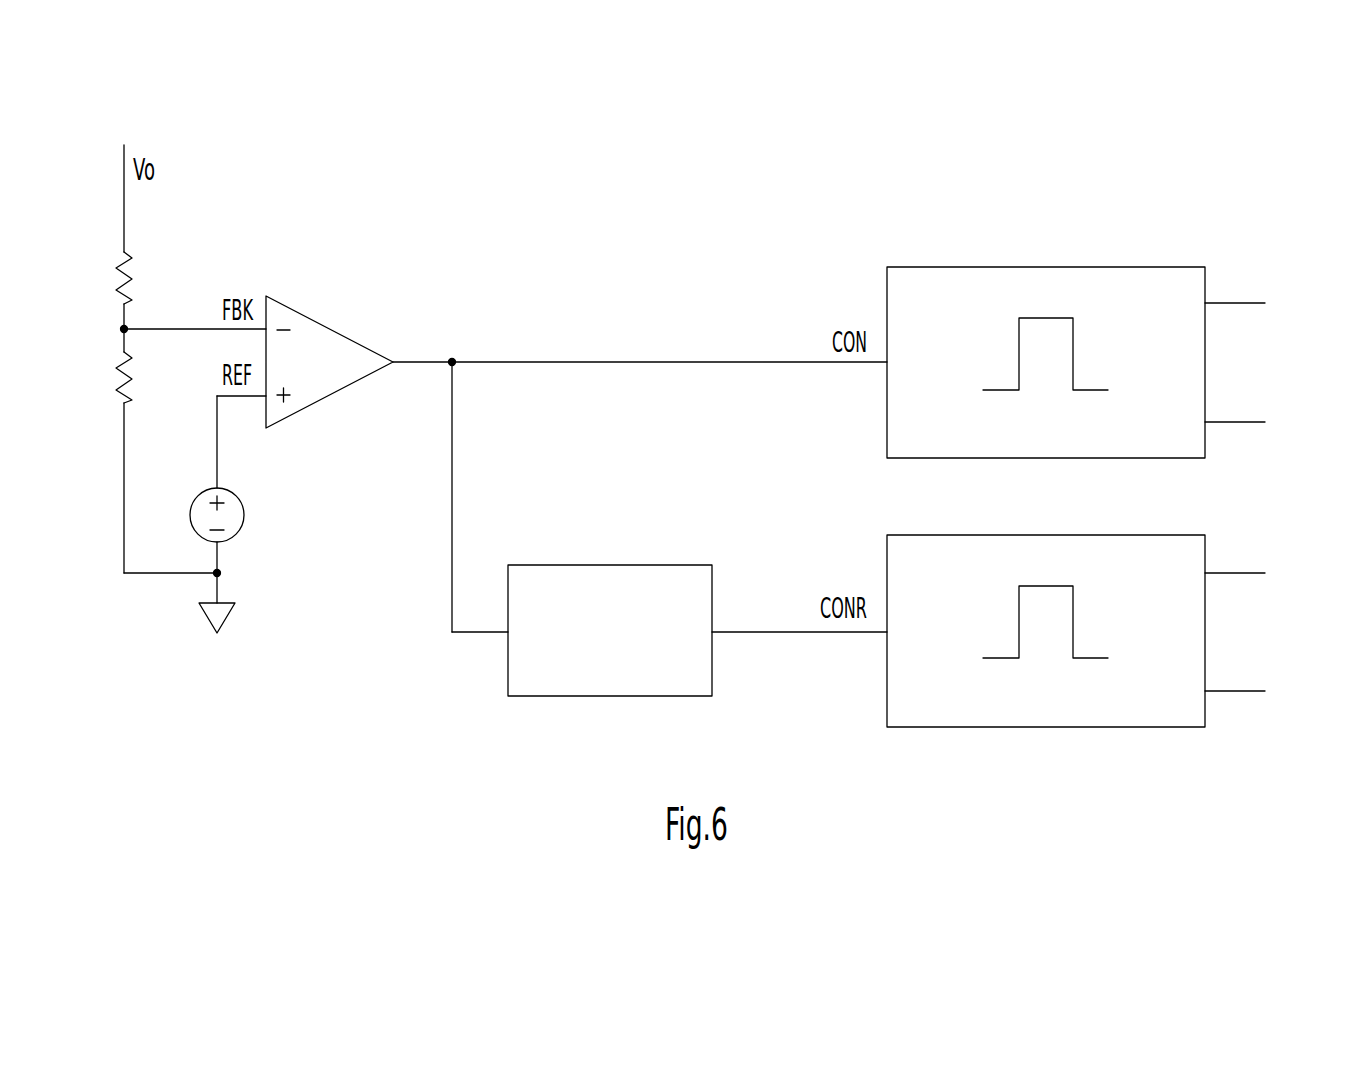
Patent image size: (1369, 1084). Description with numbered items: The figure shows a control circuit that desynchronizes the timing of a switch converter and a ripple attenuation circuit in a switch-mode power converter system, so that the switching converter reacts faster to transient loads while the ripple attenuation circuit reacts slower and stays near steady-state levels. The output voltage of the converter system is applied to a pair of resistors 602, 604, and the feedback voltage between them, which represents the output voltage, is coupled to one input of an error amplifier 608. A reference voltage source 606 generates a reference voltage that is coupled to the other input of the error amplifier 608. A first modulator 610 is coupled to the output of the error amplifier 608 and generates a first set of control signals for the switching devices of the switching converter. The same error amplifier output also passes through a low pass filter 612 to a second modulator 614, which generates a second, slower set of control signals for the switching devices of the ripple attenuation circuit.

The resistor 602 is at (133, 280).
The resistor 604 is at (133, 380).
The reference voltage source 606 is at (244, 515).
The error amplifier 608 is at (333, 328).
The first modulator 610 is at (1047, 267).
The low pass filter 612 is at (610, 565).
The second modulator 614 is at (1047, 535).